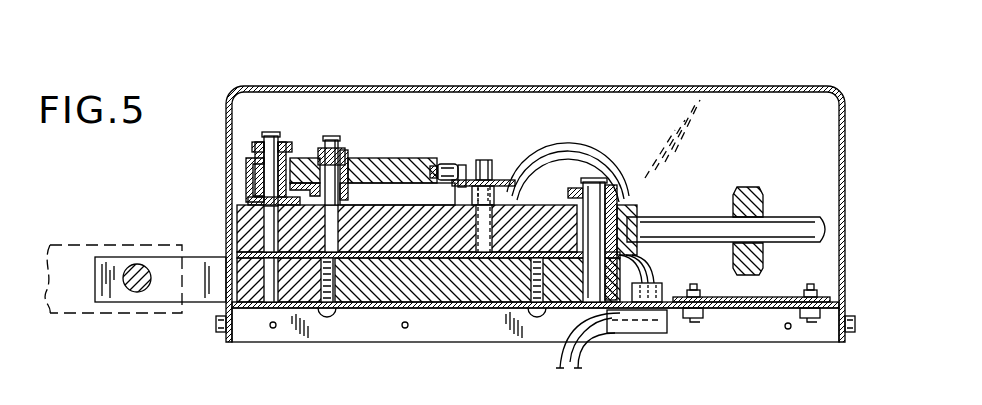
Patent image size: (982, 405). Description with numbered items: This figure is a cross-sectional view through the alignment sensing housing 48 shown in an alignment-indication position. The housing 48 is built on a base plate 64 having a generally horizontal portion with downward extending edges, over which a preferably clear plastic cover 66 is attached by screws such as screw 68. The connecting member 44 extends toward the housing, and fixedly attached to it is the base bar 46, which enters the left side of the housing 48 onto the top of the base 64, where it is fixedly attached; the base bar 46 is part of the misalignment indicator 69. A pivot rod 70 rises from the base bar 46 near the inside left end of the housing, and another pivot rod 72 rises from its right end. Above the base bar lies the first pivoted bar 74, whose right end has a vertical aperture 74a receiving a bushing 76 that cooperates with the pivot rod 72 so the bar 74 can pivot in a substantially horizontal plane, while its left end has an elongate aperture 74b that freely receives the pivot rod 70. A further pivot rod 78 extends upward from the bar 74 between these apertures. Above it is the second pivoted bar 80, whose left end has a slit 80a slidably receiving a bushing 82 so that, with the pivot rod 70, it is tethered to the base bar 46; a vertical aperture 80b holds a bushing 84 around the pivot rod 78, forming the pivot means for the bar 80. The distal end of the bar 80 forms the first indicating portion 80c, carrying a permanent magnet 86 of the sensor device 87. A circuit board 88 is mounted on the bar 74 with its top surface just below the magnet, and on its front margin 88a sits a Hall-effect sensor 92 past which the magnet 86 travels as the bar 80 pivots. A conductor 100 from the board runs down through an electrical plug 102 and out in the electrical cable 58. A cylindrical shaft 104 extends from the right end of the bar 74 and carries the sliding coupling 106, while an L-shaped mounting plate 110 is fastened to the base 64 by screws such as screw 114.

The connecting member 44 is at (78, 243).
The base bar 46 is at (167, 256).
The alignment sensing housing 48 is at (481, 78).
The electrical cable 58 is at (584, 362).
The base plate 64 is at (488, 323).
The cover 66 is at (846, 165).
The screw 68 is at (217, 325).
The misalignment indicator 69 is at (354, 135).
The pivot rod 70 is at (272, 134).
The pivot rod 72 is at (596, 178).
The first pivoted bar 74 is at (389, 207).
The vertical aperture 74a is at (580, 226).
The elongate aperture 74b is at (266, 218).
The bushing 76 is at (630, 203).
The pivot rod 78 is at (334, 142).
The second pivoted bar 80 is at (303, 156).
The slit 80a is at (252, 172).
The vertical aperture 80b is at (352, 136).
The first indicating portion 80c is at (437, 172).
The bushing 82 is at (292, 146).
The bushing 84 is at (370, 172).
The permanent magnet 86 is at (448, 167).
The sensor device 87 is at (491, 158).
The circuit board 88 is at (495, 181).
The front margin 88a is at (456, 187).
The Hall-effect sensor 92 is at (463, 170).
The conductor 100 is at (533, 155).
The electrical plug 102 is at (652, 325).
The cylindrical shaft 104 is at (689, 216).
The coupling 106 is at (771, 199).
The mounting plate 110 is at (790, 297).
The screw 114 is at (806, 318).